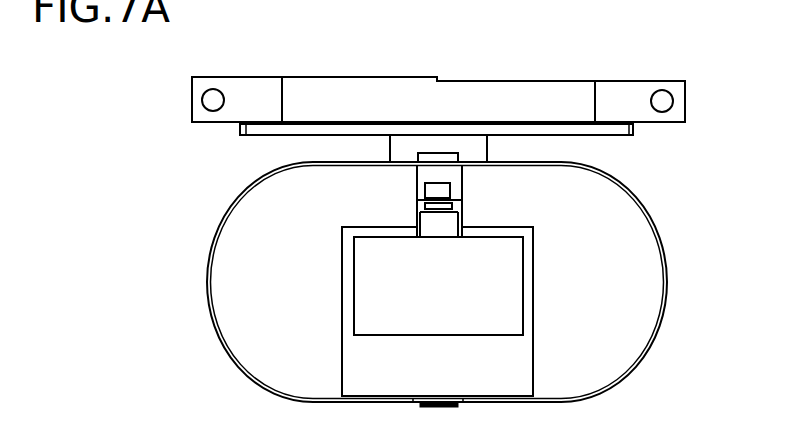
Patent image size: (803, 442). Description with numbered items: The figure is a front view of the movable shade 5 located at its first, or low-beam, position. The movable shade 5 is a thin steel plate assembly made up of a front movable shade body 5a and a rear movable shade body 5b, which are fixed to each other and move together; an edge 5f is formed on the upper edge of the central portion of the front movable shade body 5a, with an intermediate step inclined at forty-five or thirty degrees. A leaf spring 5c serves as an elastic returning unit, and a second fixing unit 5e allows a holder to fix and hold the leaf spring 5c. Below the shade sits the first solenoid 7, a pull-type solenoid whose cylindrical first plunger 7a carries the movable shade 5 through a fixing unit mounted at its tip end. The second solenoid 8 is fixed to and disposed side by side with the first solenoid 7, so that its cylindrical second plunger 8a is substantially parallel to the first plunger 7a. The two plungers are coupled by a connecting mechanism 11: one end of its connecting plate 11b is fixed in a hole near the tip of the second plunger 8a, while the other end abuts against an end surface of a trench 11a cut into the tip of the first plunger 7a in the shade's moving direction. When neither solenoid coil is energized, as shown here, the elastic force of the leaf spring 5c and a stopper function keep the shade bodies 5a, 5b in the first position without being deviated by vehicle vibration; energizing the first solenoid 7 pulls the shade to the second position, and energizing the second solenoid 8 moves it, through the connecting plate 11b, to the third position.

The movable shade 5 is at (528, 80).
The front movable shade body 5a is at (192, 100).
The rear movable shade body 5b is at (240, 126).
The leaf spring 5c is at (207, 283).
The second fixing unit 5e is at (413, 403).
The edge 5f is at (437, 77).
The first solenoid 7 is at (336, 345).
The first plunger 7a is at (423, 175).
The second solenoid 8 is at (530, 287).
The second plunger 8a is at (447, 221).
The connecting mechanism 11 is at (468, 192).
The trench 11a is at (440, 190).
The connecting plate 11b is at (430, 205).